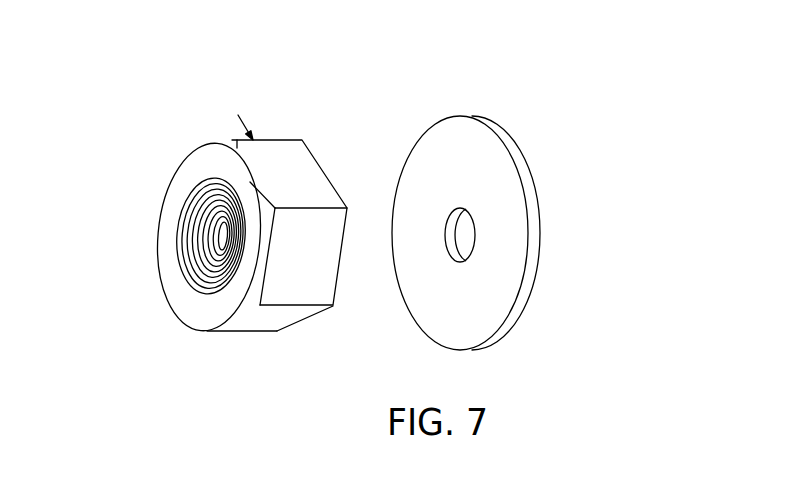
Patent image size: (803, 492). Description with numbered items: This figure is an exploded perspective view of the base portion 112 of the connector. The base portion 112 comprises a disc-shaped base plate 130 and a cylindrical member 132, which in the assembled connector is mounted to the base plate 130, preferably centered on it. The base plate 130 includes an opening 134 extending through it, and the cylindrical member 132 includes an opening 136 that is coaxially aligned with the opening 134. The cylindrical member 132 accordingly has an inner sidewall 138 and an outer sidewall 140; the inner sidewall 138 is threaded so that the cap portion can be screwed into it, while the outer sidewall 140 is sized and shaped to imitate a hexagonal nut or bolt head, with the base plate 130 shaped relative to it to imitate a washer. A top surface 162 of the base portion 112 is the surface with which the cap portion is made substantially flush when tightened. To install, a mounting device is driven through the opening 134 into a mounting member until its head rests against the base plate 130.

The base portion 112 is at (482, 90).
The base plate 130 is at (507, 238).
The cylindrical member 132 is at (233, 153).
The opening 134 is at (474, 226).
The opening 136 is at (203, 237).
The inner sidewall 138 is at (226, 225).
The outer sidewall 140 is at (268, 178).
The top surface 162 is at (205, 167).